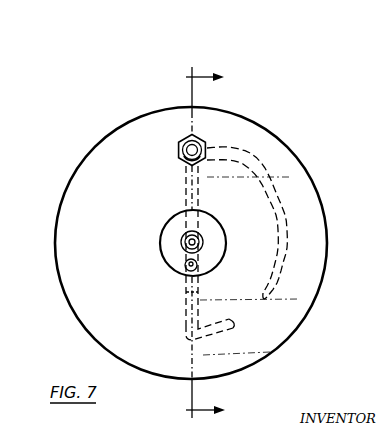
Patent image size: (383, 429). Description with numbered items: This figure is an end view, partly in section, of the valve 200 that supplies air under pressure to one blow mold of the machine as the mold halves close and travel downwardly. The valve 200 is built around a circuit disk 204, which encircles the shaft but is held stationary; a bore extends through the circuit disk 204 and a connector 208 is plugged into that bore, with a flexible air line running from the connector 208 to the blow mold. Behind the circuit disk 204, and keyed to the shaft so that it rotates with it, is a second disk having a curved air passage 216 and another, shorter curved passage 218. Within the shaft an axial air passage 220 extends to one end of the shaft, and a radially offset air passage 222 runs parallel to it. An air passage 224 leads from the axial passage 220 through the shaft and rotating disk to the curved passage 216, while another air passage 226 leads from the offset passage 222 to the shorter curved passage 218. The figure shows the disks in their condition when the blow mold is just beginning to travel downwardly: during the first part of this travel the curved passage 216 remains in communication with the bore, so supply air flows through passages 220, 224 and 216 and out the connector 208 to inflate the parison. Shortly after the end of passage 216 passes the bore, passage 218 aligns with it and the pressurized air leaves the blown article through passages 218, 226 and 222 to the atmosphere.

The valve 200 is at (156, 106).
The circuit disk 204 is at (125, 126).
The connector 208 is at (203, 142).
The curved air passage 216 is at (282, 151).
The shorter curved passage 218 is at (237, 323).
The axial air passage 220 is at (183, 241).
The radially offset air passage 222 is at (184, 267).
The air passage 224 is at (186, 187).
The air passage 226 is at (186, 297).